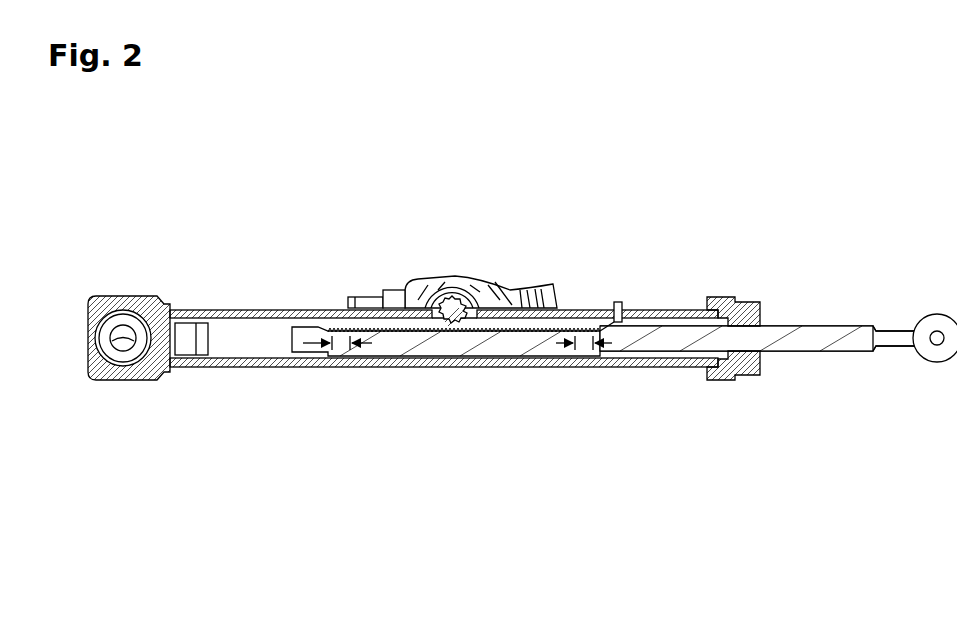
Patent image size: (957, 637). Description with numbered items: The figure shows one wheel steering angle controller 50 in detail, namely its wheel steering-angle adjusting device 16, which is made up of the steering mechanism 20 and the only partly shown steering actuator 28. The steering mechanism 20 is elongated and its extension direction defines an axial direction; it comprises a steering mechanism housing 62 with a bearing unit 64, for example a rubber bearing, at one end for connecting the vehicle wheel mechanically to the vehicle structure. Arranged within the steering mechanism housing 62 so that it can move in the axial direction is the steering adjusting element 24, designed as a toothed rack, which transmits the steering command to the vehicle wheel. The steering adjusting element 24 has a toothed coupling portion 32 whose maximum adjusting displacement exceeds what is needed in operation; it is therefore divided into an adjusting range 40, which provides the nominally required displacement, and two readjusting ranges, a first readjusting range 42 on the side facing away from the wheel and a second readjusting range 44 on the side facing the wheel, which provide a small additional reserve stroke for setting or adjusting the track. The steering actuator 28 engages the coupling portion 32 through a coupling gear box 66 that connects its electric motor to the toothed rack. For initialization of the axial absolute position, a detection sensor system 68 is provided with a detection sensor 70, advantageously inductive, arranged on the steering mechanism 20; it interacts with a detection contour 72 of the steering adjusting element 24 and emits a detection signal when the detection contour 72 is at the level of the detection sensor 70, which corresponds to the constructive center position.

The wheel steering-angle adjusting device 16 is at (785, 200).
The wheel steering angle controller 50 is at (833, 218).
The steering mechanism 20 is at (655, 262).
The steering adjusting element 24 is at (812, 326).
The steering actuator 28 is at (497, 278).
The coupling portion 32 is at (400, 308).
The adjusting range 40 is at (462, 346).
The first readjusting range 42 is at (349, 346).
The second readjusting range 44 is at (577, 346).
The steering mechanism housing 62 is at (251, 310).
The bearing unit 64 is at (123, 308).
The coupling gear box 66 is at (455, 292).
The detection sensor system 68 is at (634, 301).
The detection sensor 70 is at (617, 301).
The detection contour 72 is at (618, 328).